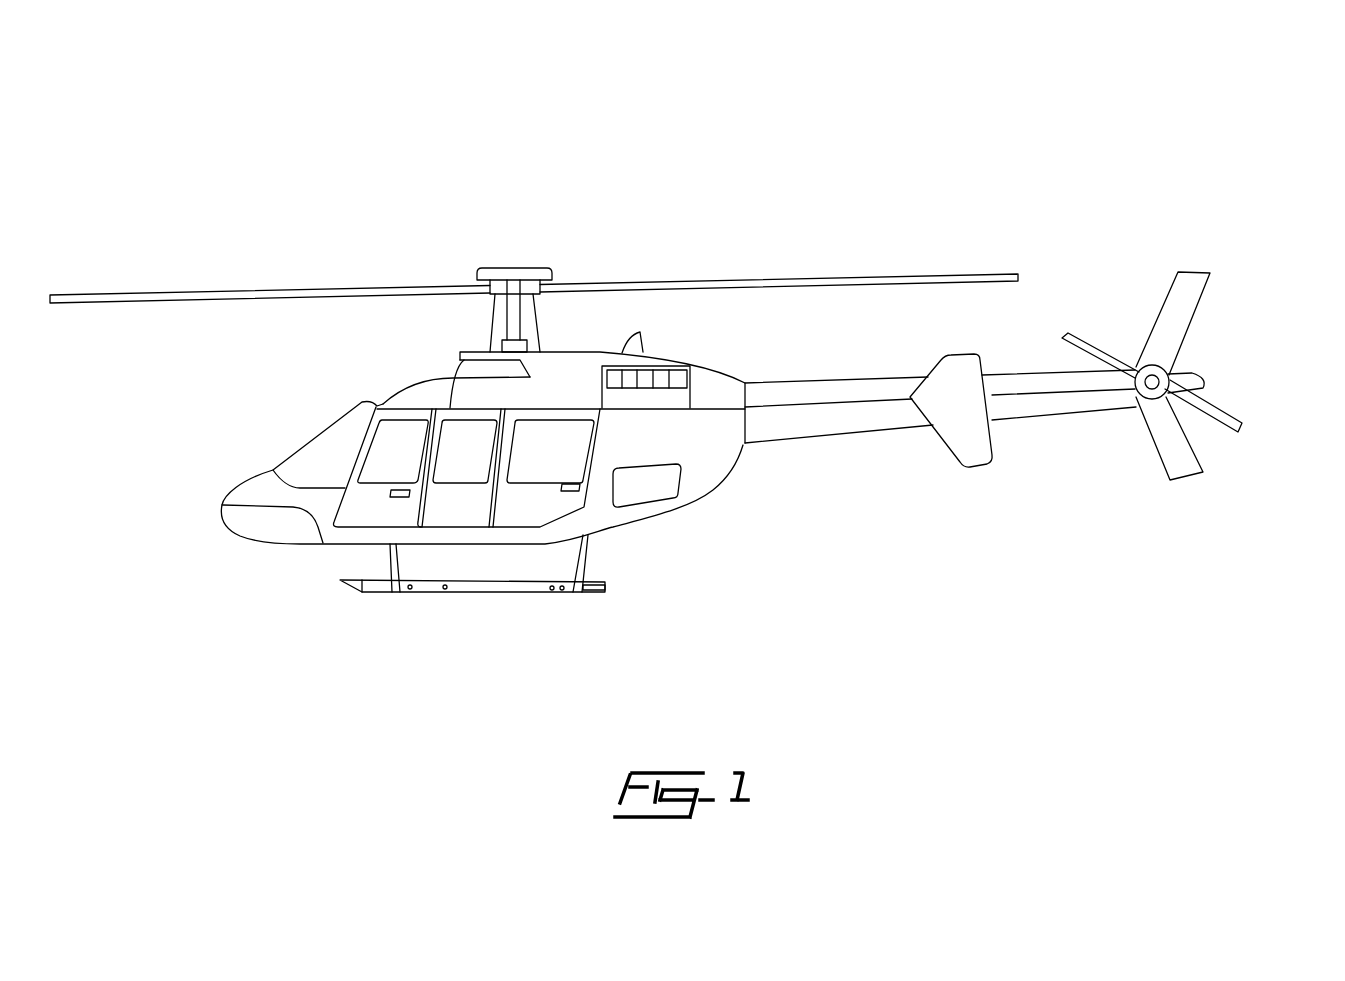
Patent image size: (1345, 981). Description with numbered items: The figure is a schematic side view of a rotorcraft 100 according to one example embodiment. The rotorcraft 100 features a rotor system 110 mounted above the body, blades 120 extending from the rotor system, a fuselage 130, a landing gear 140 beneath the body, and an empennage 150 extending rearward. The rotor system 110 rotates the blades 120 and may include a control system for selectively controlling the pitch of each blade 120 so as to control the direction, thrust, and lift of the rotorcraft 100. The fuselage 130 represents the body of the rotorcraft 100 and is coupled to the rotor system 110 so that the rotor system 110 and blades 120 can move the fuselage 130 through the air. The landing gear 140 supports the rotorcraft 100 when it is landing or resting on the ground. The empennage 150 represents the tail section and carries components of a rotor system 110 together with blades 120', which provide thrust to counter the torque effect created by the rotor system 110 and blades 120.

The rotorcraft 100 is at (252, 145).
The rotor system 110 is at (516, 265).
The blades 120 is at (534, 248).
The blades 120' is at (1200, 376).
The fuselage 130 is at (273, 535).
The landing gear 140 is at (432, 590).
The empennage 150 is at (848, 440).